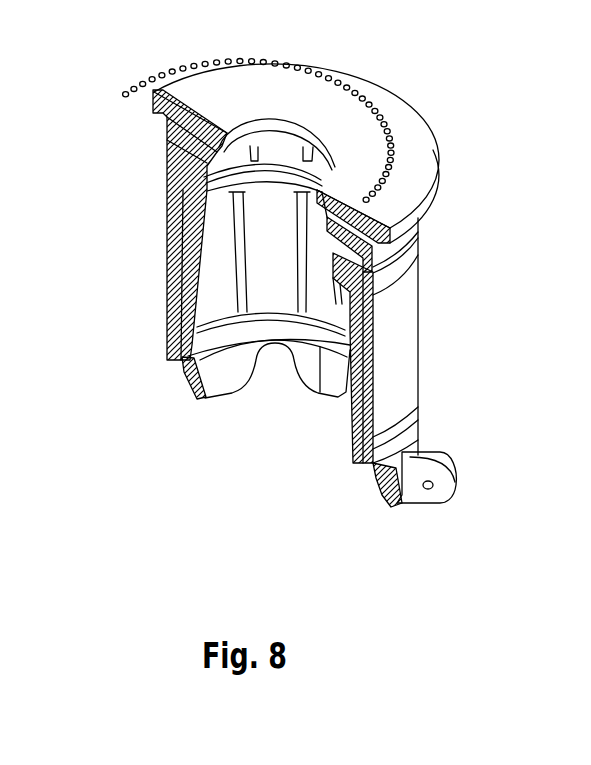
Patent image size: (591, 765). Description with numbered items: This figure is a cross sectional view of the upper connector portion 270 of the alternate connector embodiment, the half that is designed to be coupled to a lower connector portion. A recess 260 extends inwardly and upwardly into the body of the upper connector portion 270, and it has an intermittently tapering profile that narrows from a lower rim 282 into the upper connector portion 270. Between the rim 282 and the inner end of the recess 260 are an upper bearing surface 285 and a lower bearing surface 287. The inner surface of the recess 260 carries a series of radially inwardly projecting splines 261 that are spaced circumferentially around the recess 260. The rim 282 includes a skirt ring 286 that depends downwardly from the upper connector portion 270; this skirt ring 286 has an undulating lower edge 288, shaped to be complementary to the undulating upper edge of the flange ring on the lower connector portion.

The upper connector portion 270 is at (487, 80).
The lower rim 282 is at (157, 362).
The recess 260 is at (288, 407).
The upper bearing surface 285 is at (227, 187).
The splines 261 is at (233, 272).
The lower bearing surface 287 is at (237, 330).
The undulating lower edge 288 is at (202, 400).
The skirt ring 286 is at (407, 493).